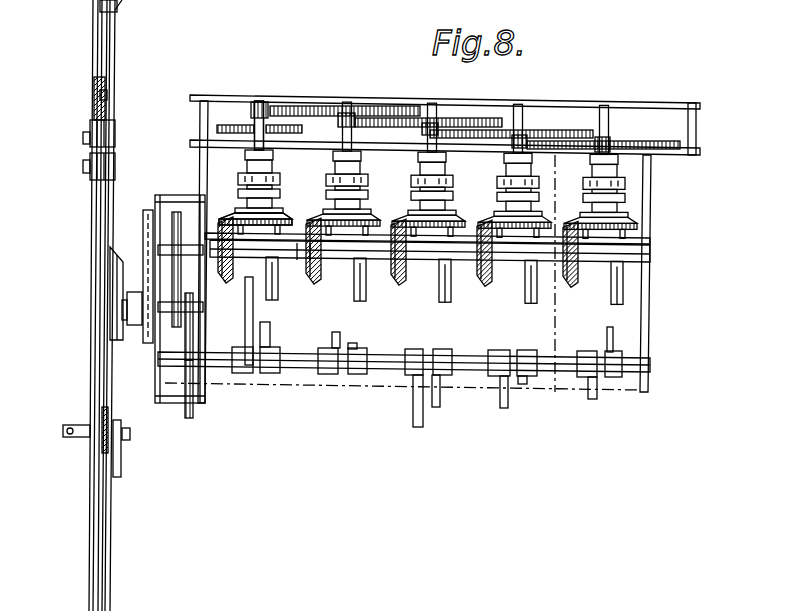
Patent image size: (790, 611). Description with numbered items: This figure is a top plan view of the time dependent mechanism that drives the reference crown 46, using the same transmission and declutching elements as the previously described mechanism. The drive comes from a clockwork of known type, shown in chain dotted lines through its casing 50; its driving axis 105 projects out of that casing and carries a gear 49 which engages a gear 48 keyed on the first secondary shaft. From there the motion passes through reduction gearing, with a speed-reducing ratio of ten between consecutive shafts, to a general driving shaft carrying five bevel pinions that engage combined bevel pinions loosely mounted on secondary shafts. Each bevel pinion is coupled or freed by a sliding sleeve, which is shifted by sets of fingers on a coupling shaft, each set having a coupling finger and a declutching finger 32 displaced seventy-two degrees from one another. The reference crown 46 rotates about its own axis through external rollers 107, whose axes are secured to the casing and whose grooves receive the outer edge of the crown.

The reference crown 46 is at (96, 87).
The external rollers 107 is at (88, 125).
The gear 48 is at (227, 123).
The gear 49 is at (272, 126).
The driving axis 105 is at (252, 122).
The casing 50 is at (472, 393).
The finger for declutching 32 is at (245, 372).